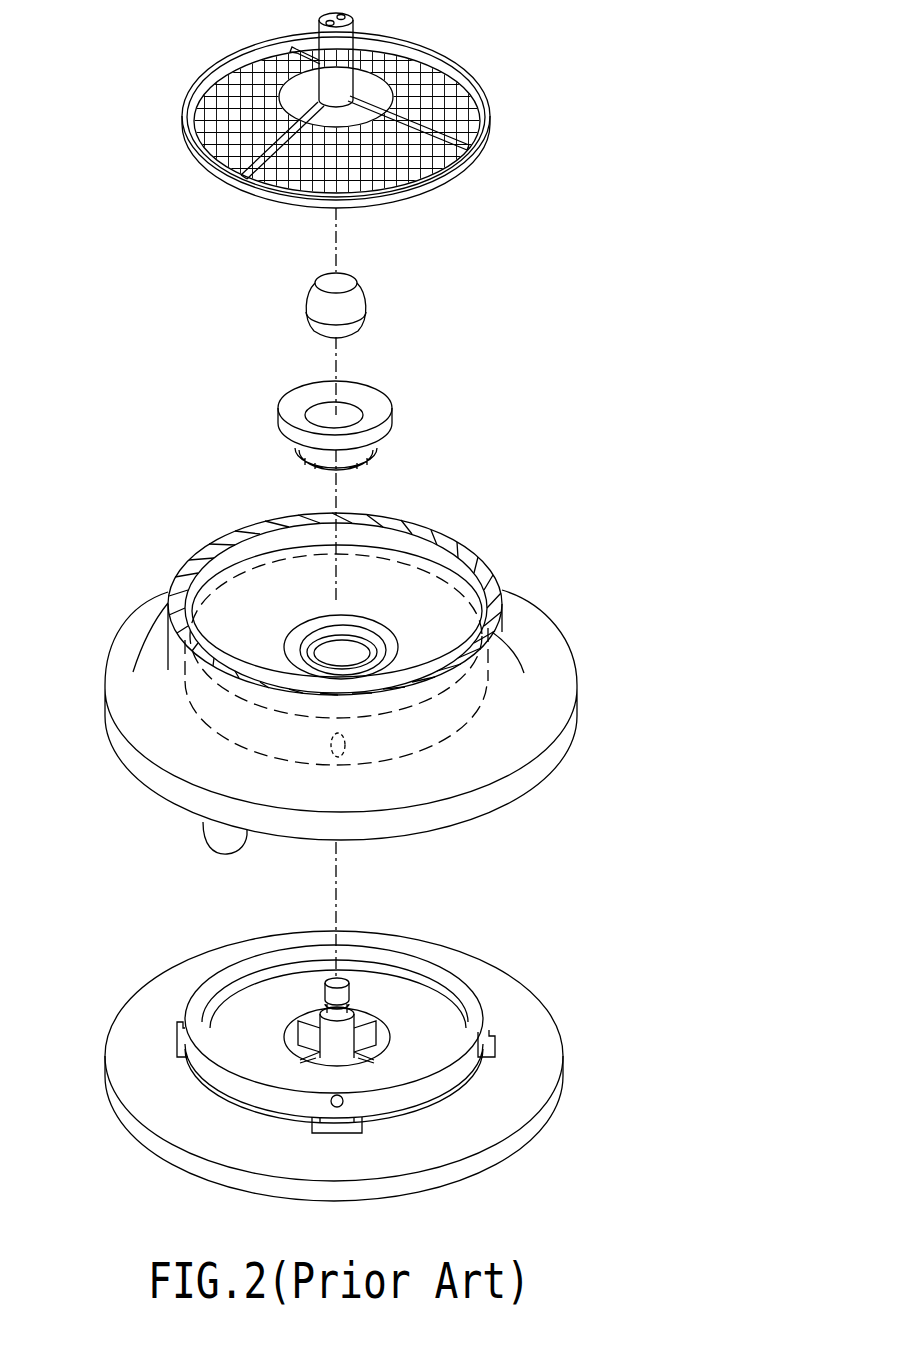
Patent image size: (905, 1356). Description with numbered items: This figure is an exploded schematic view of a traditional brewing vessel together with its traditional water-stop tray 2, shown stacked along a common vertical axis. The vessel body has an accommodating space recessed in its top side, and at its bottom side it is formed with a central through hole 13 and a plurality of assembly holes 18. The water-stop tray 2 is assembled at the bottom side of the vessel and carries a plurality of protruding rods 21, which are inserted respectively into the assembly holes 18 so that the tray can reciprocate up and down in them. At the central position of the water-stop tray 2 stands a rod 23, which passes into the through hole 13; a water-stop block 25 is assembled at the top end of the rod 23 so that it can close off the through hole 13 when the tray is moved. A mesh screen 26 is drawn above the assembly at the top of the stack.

The filter screen 26 is at (460, 80).
The water-stop block 25 is at (378, 292).
The through hole 13 is at (373, 625).
The assembly holes 18 is at (341, 687).
The water-stop tray 2 is at (348, 1066).
The rod 23 is at (333, 1040).
The protruding rods 21 is at (331, 1102).